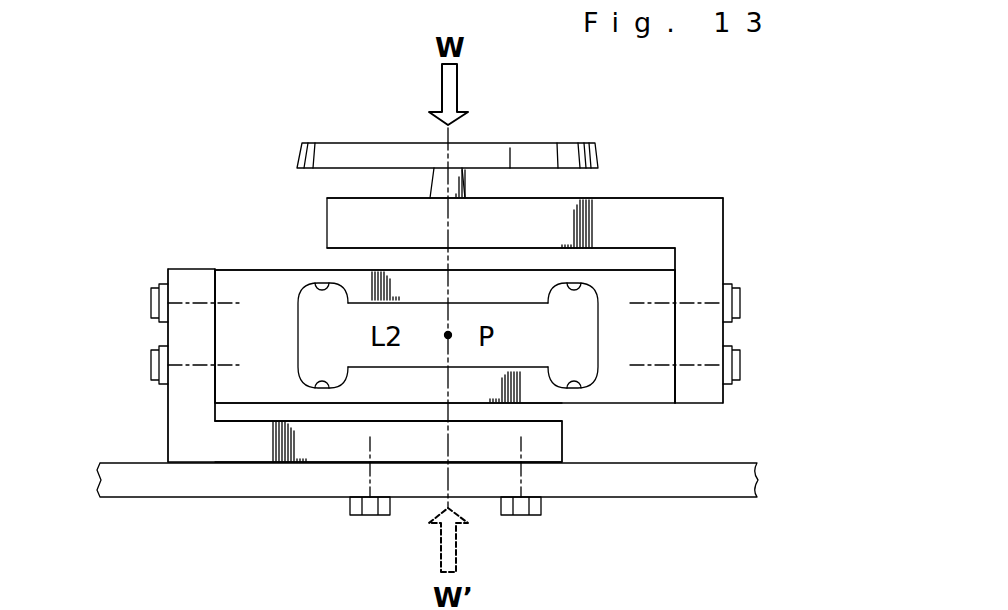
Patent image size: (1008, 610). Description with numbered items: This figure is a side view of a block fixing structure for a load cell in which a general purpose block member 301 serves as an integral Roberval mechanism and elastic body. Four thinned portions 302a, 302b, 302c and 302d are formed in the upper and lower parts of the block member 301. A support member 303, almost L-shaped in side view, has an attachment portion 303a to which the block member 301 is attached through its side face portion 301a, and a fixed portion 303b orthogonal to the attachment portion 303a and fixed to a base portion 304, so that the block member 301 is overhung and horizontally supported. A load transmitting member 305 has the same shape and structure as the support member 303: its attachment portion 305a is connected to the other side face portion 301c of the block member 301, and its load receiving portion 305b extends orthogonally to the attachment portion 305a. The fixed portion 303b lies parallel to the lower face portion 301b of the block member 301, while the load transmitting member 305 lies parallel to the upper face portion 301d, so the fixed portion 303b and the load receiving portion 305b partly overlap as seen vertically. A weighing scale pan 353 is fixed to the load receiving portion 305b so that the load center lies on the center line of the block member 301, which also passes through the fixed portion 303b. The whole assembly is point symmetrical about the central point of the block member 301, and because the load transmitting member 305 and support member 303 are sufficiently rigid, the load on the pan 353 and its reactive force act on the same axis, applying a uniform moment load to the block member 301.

The general purpose block member 301 is at (446, 369).
The side face portion 301a is at (213, 335).
The lower face portion 301b is at (267, 403).
The side face portion 301c is at (677, 332).
The upper face portion 301d is at (272, 268).
The thinned portion 302a is at (588, 282).
The thinned portion 302b is at (318, 296).
The thinned portion 302c is at (315, 386).
The thinned portion 302d is at (590, 382).
The support member 303 is at (303, 427).
The attachment portion 303a is at (185, 399).
The fixed portion 303b is at (413, 440).
The base portion 304 is at (143, 488).
The load transmitting member 305 is at (580, 247).
The attachment portion 305a is at (725, 260).
The load receiving portion 305b is at (604, 198).
The weighing scale pan 353 is at (537, 152).